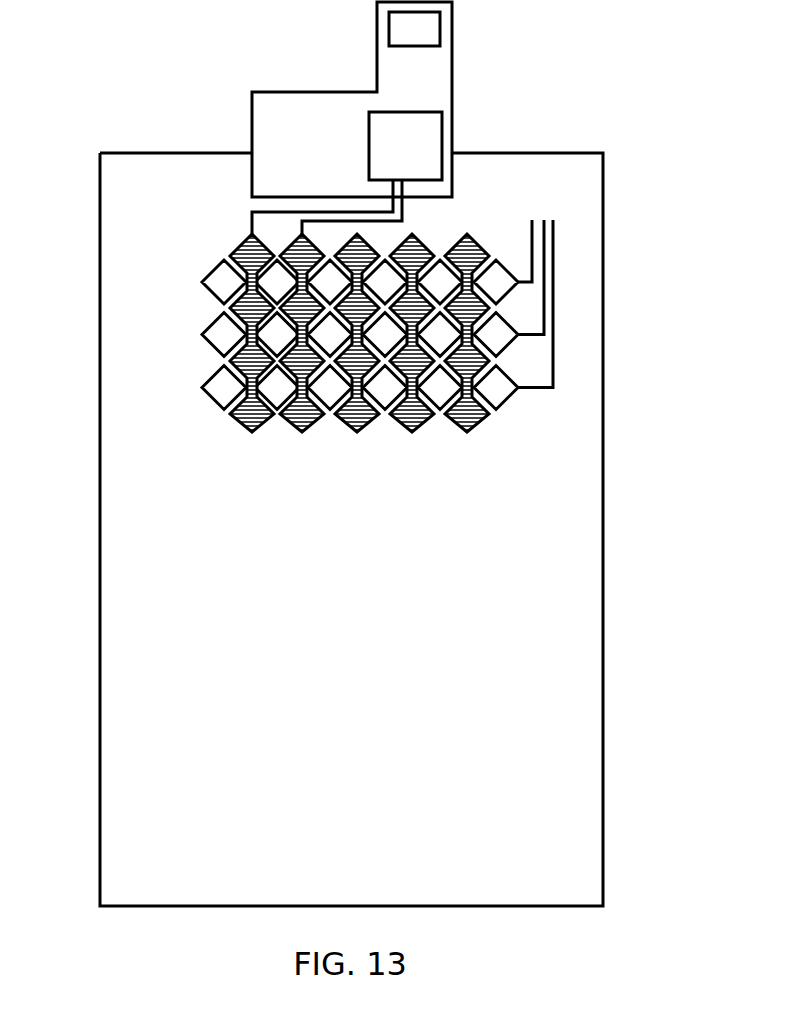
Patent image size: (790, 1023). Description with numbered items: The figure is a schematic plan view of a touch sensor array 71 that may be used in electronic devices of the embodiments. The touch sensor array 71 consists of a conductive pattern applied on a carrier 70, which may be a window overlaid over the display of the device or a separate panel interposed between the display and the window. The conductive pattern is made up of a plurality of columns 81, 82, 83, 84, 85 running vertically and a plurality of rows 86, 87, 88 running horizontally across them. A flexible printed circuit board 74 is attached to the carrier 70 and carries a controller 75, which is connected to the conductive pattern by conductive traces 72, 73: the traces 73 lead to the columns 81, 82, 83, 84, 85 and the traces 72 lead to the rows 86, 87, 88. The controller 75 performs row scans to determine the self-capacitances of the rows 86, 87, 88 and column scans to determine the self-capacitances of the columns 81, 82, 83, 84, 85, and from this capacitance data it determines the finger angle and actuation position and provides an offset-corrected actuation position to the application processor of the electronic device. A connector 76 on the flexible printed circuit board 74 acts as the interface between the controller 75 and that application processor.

The carrier 70 is at (98, 150).
The touch sensor array 71 is at (361, 356).
The conductive traces 72 is at (555, 337).
The conductive traces 73 is at (245, 212).
The flexible printed circuit board 74 is at (375, 60).
The controller 75 is at (441, 133).
The connector 76 is at (440, 37).
The column 81 is at (252, 432).
The column 82 is at (302, 432).
The column 83 is at (357, 432).
The column 84 is at (412, 432).
The column 85 is at (467, 432).
The row 86 is at (202, 280).
The row 87 is at (202, 336).
The row 88 is at (202, 390).